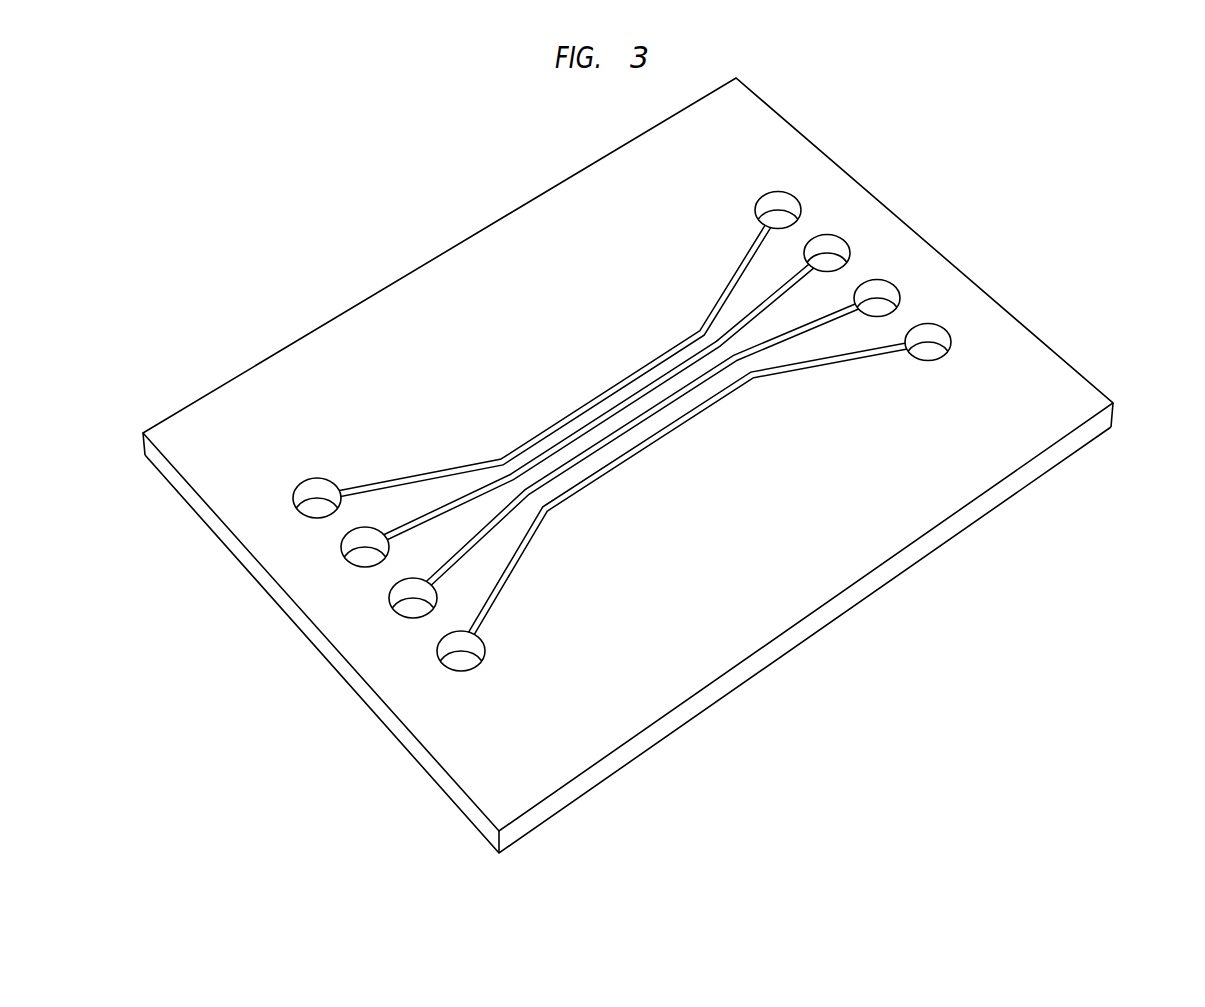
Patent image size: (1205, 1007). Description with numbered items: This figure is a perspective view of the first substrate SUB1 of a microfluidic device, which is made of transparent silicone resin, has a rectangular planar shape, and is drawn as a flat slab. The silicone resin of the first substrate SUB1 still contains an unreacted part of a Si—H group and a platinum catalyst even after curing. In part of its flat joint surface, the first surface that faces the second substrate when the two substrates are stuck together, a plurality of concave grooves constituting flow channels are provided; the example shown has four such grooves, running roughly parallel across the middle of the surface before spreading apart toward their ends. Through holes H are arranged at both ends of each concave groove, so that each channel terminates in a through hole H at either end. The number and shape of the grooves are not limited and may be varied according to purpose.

The through hole H is at (312, 507).
The first substrate SUB1 is at (1055, 375).